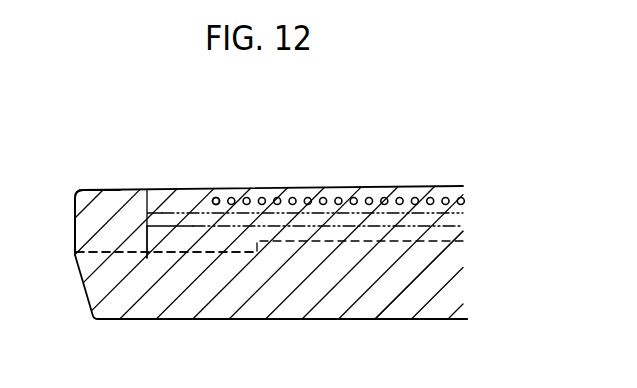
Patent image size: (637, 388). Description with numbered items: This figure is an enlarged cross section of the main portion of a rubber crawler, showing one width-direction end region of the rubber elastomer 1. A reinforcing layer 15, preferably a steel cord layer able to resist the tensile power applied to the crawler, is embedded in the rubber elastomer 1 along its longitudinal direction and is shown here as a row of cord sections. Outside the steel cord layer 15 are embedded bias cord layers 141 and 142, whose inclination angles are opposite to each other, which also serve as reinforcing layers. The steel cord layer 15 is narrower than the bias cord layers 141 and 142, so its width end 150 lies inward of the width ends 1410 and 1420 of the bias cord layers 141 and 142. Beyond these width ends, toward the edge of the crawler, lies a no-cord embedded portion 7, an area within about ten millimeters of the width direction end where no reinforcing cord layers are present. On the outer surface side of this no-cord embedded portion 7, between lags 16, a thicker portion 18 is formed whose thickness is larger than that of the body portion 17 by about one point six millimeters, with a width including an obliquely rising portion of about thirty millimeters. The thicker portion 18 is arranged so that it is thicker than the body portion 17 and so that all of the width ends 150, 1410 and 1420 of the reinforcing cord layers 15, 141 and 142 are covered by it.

The rubber elastomer 1 is at (423, 193).
The no-cord embedded portion 7 is at (97, 217).
The width end of bias cord layer 1410 is at (146, 190).
The bias cord layer 141 is at (283, 213).
The bias cord layer 142 is at (258, 228).
The width end of bias cord layer 1420 is at (147, 258).
The reinforcing layer 15 is at (353, 197).
The width end of steel cord layer 150 is at (222, 191).
The lag 16 is at (373, 297).
The body portion 17 is at (399, 222).
The thicker portion 18 is at (203, 250).